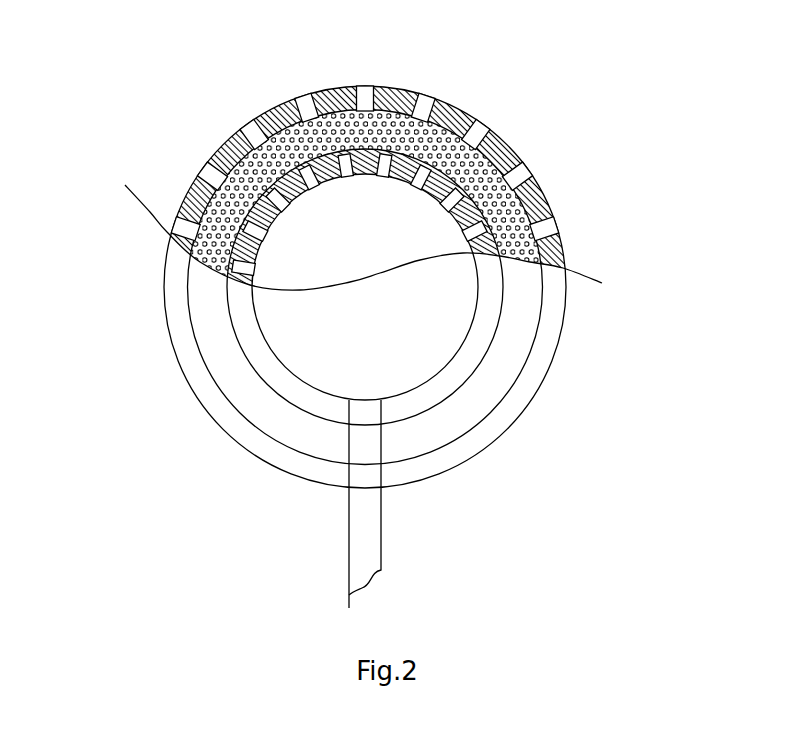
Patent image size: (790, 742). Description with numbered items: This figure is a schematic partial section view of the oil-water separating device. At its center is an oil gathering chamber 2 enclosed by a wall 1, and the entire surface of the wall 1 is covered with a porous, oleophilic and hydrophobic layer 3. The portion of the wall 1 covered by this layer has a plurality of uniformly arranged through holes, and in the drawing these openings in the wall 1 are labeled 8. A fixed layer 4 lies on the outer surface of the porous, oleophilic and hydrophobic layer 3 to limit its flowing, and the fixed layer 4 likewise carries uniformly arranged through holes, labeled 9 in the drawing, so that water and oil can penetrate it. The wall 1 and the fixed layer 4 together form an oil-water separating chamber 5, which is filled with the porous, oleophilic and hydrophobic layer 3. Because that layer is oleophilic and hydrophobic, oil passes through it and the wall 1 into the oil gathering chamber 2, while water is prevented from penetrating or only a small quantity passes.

The wall 1 is at (421, 186).
The oil gathering chamber 2 is at (354, 250).
The porous, oleophilic and hydrophobic layer 3 is at (515, 176).
The fixed layer 4 is at (563, 253).
The oil-water separating chamber 5 is at (502, 357).
The inner slot 8 is at (308, 178).
The outer slot 9 is at (252, 130).